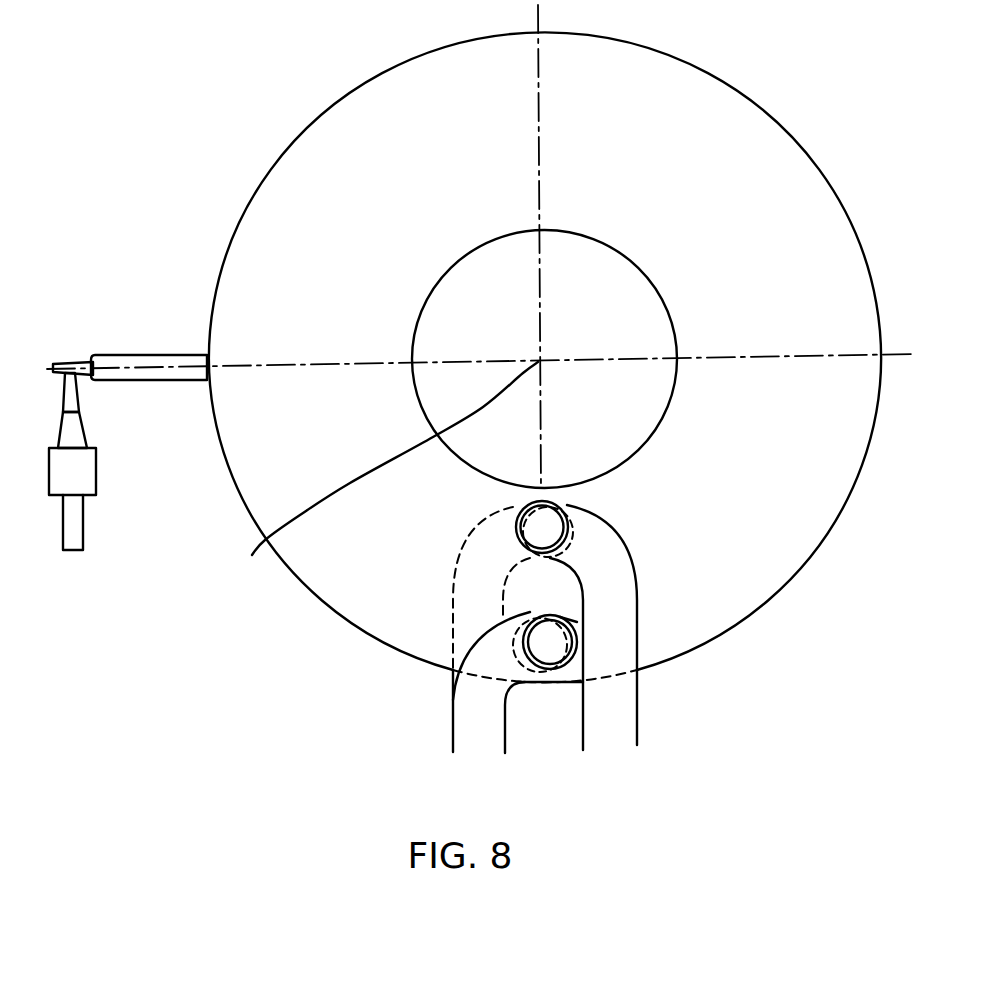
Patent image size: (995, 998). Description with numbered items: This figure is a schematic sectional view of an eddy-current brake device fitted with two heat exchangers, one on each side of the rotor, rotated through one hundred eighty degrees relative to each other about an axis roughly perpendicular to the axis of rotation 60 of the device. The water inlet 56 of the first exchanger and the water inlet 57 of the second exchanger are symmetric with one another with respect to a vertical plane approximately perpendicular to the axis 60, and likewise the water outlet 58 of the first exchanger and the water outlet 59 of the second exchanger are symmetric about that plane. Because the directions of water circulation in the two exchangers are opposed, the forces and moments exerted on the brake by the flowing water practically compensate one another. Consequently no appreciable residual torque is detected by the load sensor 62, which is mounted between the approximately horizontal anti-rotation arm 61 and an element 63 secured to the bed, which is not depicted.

The water inlet of the first exchanger 56 is at (620, 695).
The water inlet of the second exchanger 57 is at (453, 677).
The water outlet of the first exchanger 58 is at (467, 723).
The water outlet of the second exchanger 59 is at (583, 683).
The axis of rotation 60 is at (252, 555).
The anti-rotation arm 61 is at (152, 357).
The load sensor 62 is at (88, 465).
The element secured to the bed 63 is at (75, 535).